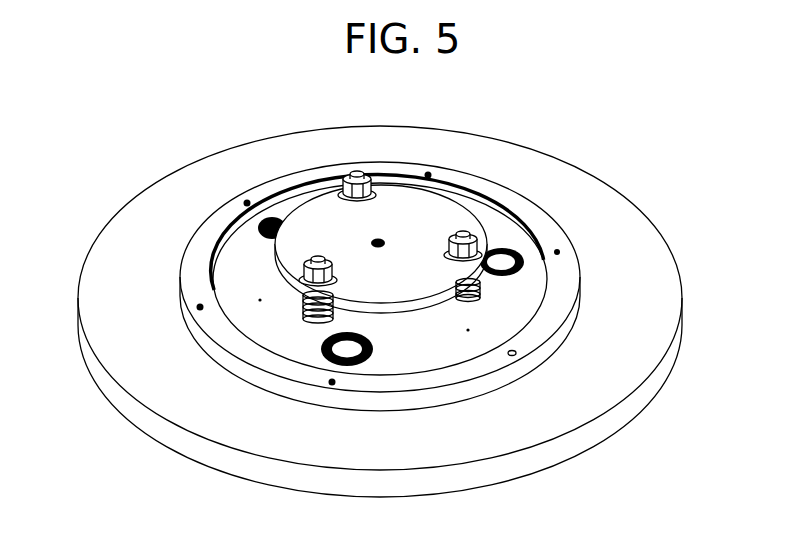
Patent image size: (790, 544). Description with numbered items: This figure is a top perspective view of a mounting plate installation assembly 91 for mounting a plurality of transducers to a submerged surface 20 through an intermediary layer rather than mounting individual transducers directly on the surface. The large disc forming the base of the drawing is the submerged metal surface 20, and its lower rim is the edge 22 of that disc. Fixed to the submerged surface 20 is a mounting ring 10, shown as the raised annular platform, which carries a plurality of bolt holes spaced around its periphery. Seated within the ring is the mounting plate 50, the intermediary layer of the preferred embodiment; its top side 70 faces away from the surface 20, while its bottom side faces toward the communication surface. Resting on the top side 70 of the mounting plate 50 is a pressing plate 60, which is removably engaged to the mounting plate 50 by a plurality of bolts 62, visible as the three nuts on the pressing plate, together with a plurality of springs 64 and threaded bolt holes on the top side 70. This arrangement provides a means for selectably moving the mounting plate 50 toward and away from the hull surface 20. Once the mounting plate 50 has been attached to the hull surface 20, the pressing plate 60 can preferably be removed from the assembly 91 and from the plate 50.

The mounting ring 10 is at (517, 200).
The submerged surface 20 is at (412, 298).
The base disc edge 22 is at (622, 422).
The mounting plate 50 is at (240, 248).
The pressing plate 60 is at (437, 215).
The bolts 62 is at (350, 181).
The springs 64 is at (528, 268).
The top side 70 is at (213, 267).
The mounting plate installation assembly 91 is at (527, 482).